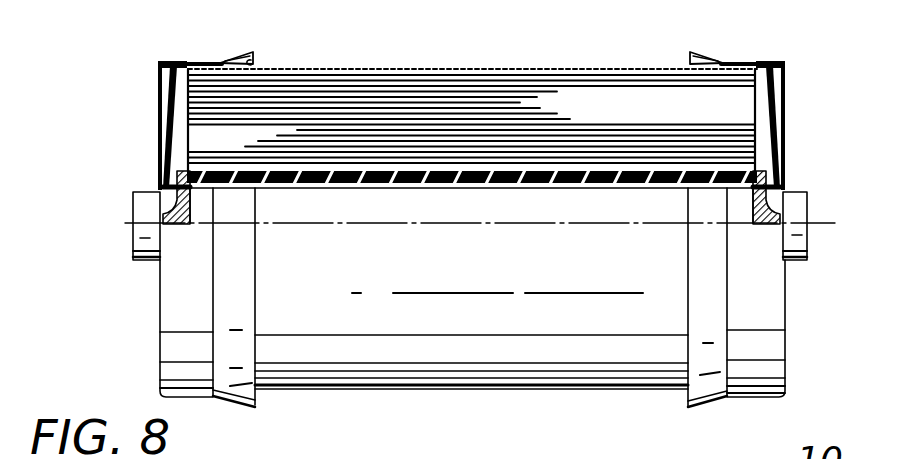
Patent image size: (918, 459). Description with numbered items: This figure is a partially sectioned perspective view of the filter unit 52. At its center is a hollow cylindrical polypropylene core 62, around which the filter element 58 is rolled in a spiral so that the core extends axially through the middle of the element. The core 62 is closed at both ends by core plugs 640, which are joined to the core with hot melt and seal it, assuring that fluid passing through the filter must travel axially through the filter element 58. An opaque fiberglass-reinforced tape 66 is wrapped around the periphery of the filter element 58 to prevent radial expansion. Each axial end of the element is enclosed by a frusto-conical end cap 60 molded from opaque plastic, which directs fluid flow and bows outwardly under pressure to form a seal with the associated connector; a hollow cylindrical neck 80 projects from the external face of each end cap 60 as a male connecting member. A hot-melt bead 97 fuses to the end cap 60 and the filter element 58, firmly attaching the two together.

The filter unit 52 is at (303, 409).
The filter element 58 is at (492, 92).
The end cap 60 is at (226, 62).
The core 62 is at (360, 184).
The fiberglass-reinforced tape 66 is at (577, 68).
The neck 80 is at (157, 190).
The bead 97 is at (262, 61).
The core plug 640 is at (192, 213).